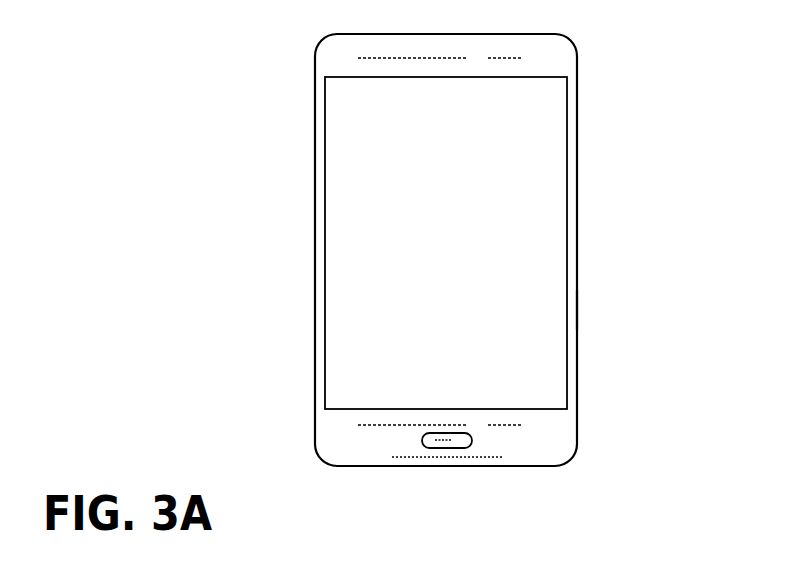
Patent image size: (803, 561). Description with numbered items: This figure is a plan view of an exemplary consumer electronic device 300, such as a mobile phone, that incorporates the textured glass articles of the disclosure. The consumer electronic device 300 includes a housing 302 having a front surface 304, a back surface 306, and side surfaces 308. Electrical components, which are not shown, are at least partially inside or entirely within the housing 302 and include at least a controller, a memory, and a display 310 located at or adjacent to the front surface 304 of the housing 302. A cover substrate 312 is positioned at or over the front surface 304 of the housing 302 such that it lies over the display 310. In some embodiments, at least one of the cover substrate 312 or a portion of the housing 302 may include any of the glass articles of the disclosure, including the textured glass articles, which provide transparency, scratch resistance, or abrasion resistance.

The consumer electronic device 300 is at (598, 92).
The housing 302 is at (340, 61).
The front surface 304 is at (547, 441).
The back surface 306 is at (367, 213).
The side surfaces 308 is at (578, 310).
The display 310 is at (518, 202).
The cover substrate 312 is at (364, 327).